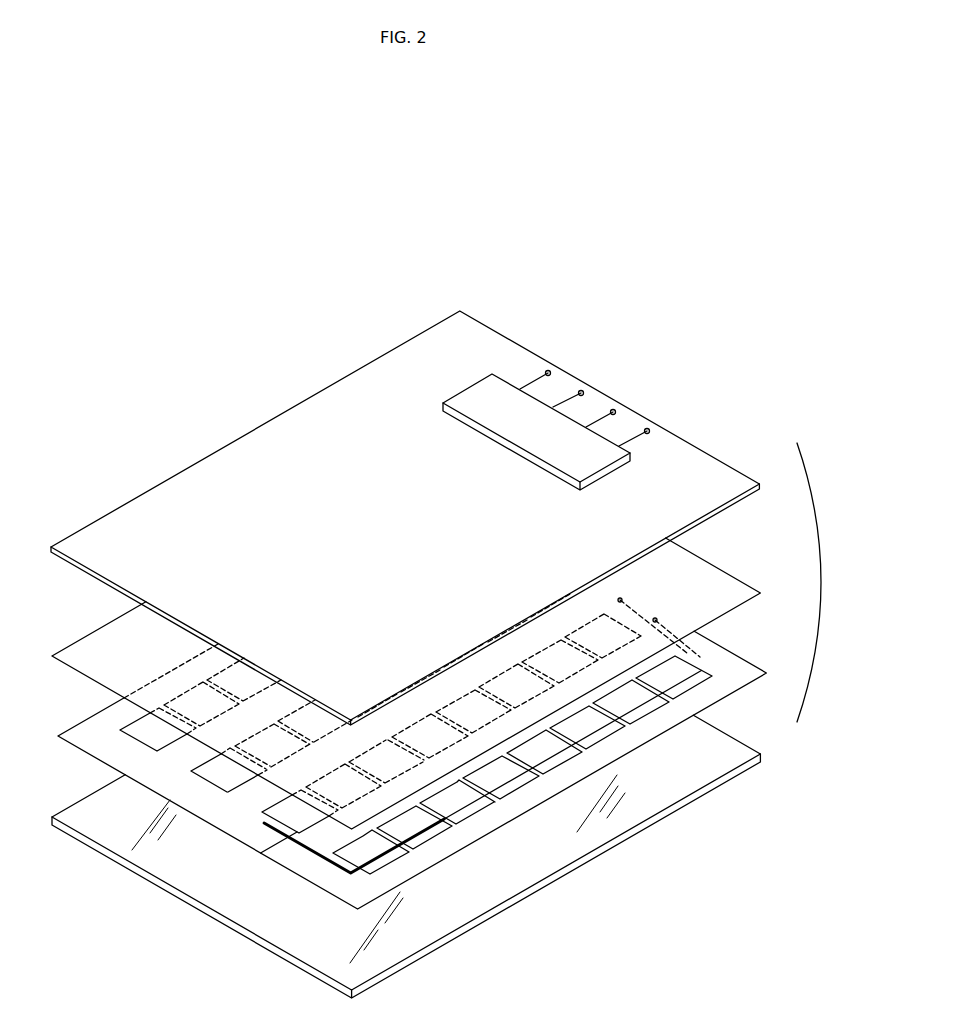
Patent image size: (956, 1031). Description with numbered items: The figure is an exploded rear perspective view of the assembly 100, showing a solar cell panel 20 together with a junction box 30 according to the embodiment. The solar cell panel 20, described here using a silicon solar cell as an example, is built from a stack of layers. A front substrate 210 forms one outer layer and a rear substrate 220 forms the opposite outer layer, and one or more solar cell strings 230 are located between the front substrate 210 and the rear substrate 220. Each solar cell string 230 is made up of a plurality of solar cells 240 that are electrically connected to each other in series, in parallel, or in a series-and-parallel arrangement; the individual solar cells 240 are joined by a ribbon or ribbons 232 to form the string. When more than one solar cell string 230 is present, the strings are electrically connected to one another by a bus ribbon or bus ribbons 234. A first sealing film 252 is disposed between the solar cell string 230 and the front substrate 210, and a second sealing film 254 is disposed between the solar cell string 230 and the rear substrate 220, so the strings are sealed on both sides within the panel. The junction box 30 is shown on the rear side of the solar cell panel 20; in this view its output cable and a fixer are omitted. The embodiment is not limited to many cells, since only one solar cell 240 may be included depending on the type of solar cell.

The display device 100 is at (76, 306).
The solar cell panel 20 is at (826, 570).
The junction box 30 is at (491, 409).
The front substrate 210 is at (740, 757).
The rear substrate 220 is at (733, 480).
The first sealing film 252 is at (742, 678).
The second sealing film 254 is at (733, 600).
The solar cell string 230 is at (416, 803).
The ribbon 232 is at (401, 861).
The bus ribbon 234 is at (308, 852).
The solar cell 240 is at (377, 863).